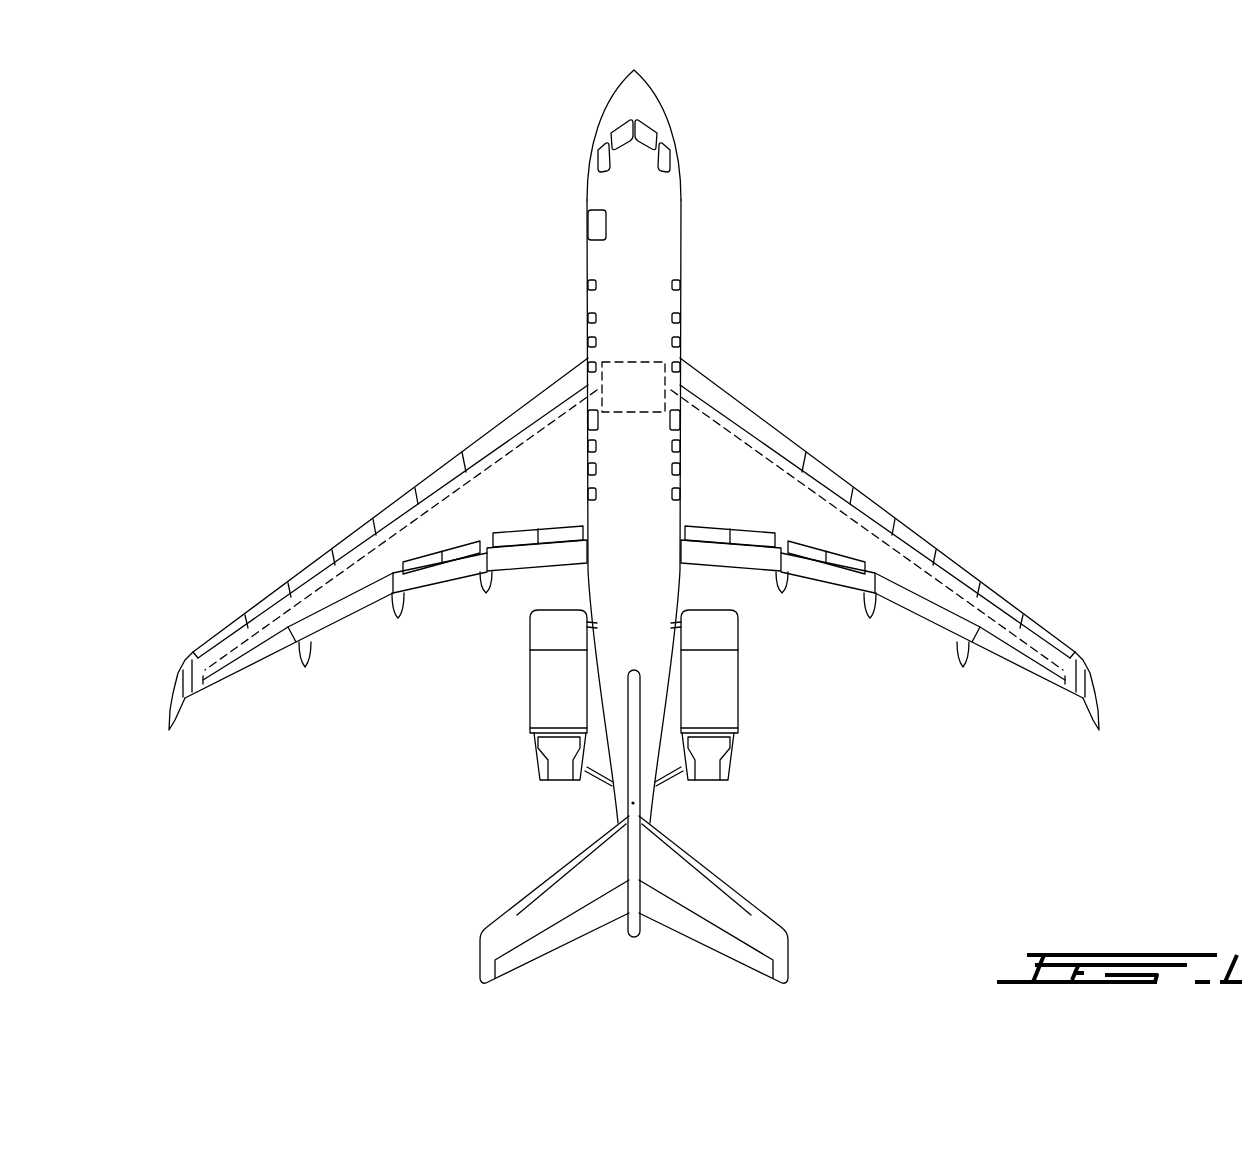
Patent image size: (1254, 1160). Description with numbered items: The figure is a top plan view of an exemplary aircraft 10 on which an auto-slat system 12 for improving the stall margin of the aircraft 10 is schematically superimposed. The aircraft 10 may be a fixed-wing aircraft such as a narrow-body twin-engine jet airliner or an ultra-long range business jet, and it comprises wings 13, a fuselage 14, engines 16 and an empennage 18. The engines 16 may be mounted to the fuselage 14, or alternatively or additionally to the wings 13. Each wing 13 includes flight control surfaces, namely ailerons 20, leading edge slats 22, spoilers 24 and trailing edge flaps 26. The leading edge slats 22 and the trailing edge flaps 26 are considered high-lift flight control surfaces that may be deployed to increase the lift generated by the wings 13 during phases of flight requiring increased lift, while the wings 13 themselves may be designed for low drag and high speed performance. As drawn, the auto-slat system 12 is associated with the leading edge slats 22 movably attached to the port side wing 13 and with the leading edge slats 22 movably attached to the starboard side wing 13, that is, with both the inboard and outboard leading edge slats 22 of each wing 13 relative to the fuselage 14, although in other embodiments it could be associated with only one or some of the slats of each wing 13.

The aircraft 10 is at (373, 183).
The auto-slat system 12 is at (649, 403).
The wings 13 is at (268, 427).
The fuselage 14 is at (648, 283).
The engines 16 is at (530, 714).
The empennage 18 is at (460, 915).
The ailerons 20 is at (257, 653).
The leading edge slats 22 is at (480, 450).
The spoilers 24 is at (560, 533).
The trailing edge flaps 26 is at (527, 557).